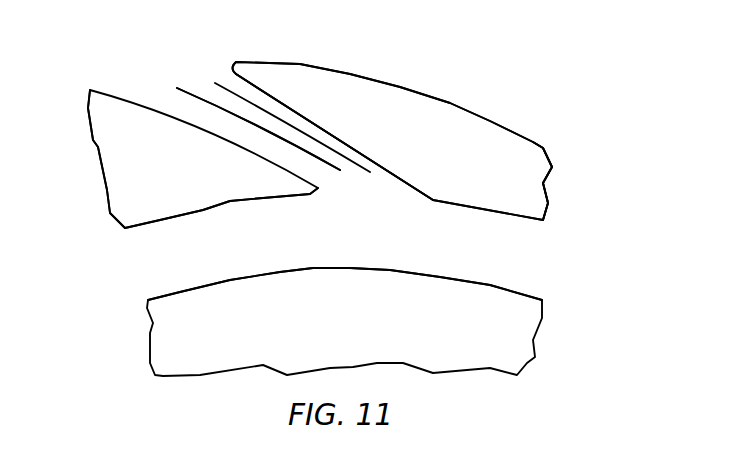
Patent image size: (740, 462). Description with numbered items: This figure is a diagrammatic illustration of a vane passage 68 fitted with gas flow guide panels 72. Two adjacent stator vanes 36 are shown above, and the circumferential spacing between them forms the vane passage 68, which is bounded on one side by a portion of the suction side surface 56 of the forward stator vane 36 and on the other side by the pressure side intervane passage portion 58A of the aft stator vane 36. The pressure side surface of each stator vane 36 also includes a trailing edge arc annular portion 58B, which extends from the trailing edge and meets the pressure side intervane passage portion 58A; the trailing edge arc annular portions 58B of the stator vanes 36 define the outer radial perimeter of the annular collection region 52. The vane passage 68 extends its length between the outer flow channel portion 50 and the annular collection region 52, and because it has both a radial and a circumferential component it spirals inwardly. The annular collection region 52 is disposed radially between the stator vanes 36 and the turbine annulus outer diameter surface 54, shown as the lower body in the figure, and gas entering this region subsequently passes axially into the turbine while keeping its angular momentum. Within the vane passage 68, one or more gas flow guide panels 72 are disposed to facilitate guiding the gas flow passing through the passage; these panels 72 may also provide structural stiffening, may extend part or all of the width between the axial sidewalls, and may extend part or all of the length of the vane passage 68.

The stator vane 36 is at (142, 168).
The outer flow channel portion 50 is at (520, 105).
The annular collection region 52 is at (509, 272).
The turbine annulus outer diameter surface 54 is at (312, 268).
The suction side surface 56 is at (105, 90).
The pressure side intervane passage portion 58A is at (346, 138).
The trailing edge arc annular portion 58B is at (148, 223).
The vane passage 68 is at (187, 108).
The gas flow guide panel 72 is at (257, 125).